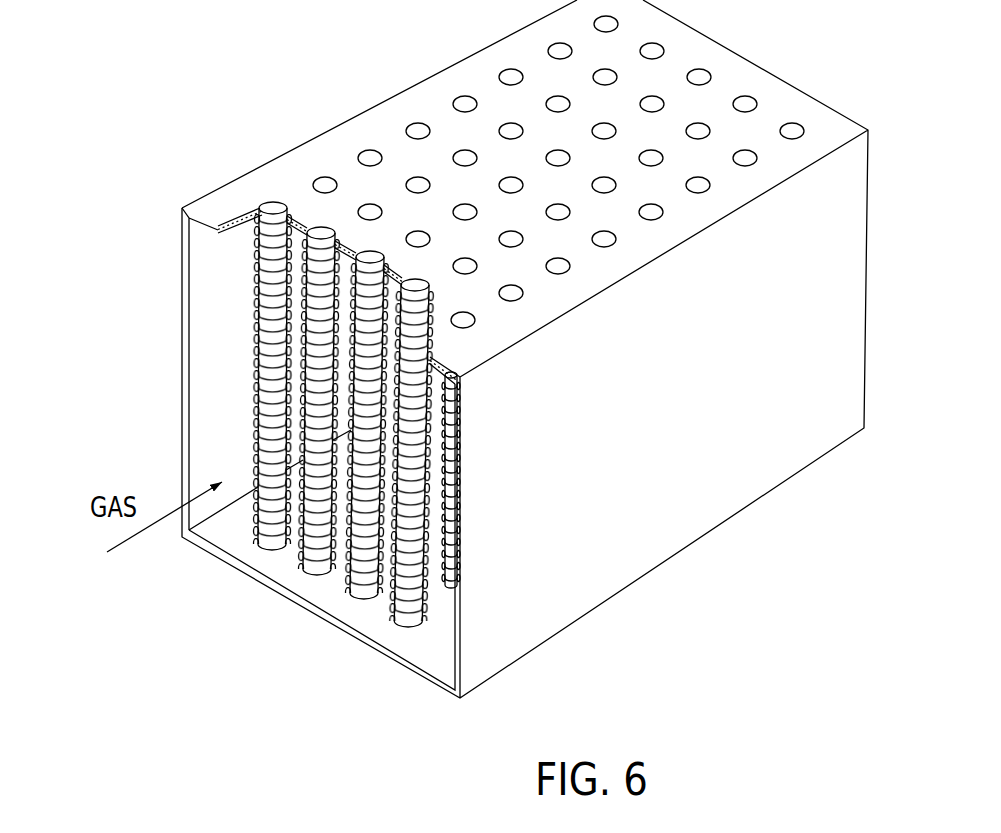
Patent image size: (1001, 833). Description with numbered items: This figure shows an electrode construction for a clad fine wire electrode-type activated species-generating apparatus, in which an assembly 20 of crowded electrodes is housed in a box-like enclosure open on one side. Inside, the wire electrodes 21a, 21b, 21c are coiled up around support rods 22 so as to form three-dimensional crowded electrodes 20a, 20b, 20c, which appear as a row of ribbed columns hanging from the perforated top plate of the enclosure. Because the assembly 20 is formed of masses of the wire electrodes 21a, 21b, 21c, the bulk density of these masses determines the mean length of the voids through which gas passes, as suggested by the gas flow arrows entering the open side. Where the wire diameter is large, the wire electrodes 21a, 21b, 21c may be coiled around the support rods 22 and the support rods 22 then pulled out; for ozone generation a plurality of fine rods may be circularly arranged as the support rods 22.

The assembly of crowded electrodes 20 is at (235, 527).
The three-dimensional crowded electrode 20a is at (235, 307).
The three-dimensional crowded electrode 20b is at (298, 572).
The housing floor 20c is at (368, 612).
The wire electrode 21a is at (263, 347).
The wire electrode 21b is at (303, 400).
The third rod 21c is at (348, 567).
The support rod 22 is at (272, 205).